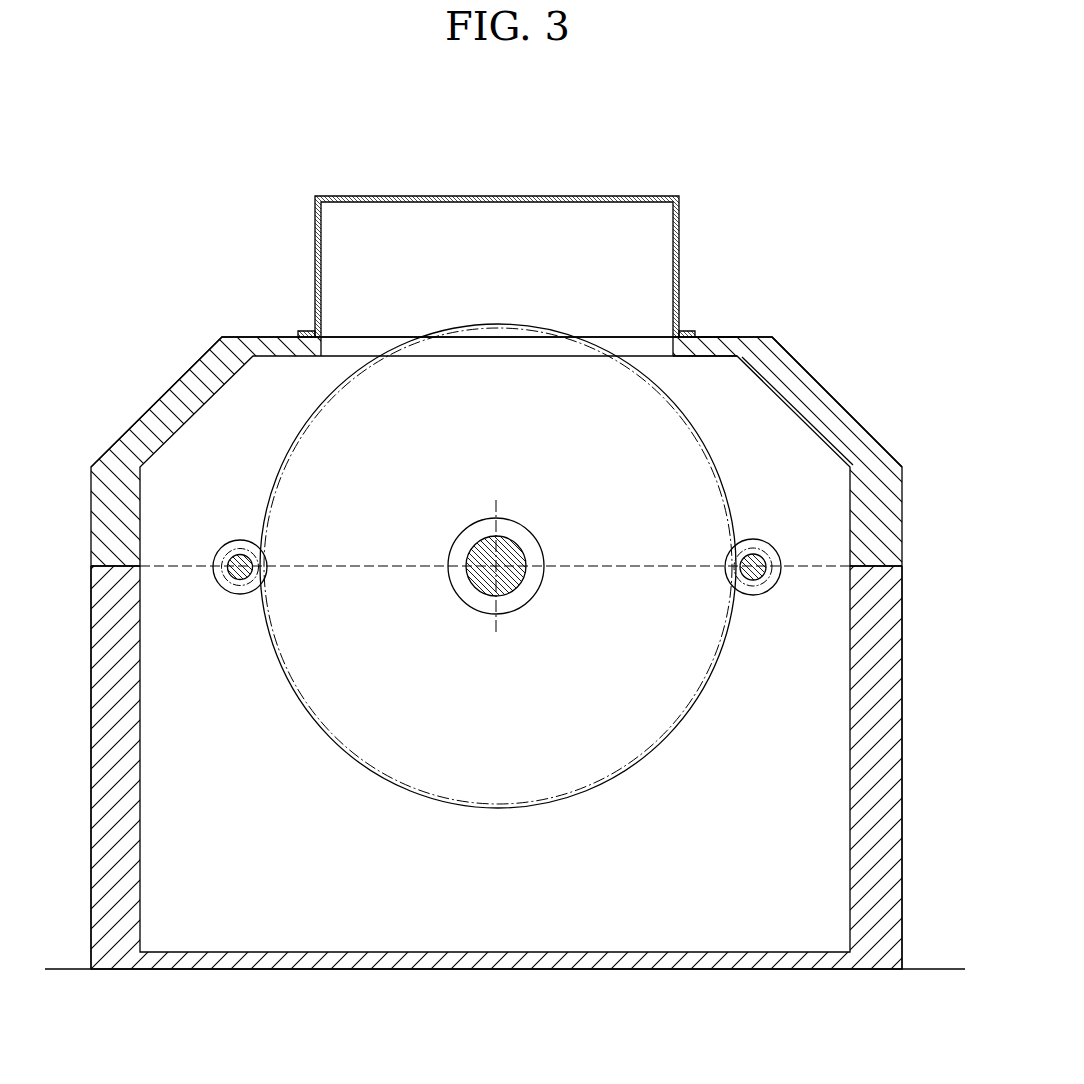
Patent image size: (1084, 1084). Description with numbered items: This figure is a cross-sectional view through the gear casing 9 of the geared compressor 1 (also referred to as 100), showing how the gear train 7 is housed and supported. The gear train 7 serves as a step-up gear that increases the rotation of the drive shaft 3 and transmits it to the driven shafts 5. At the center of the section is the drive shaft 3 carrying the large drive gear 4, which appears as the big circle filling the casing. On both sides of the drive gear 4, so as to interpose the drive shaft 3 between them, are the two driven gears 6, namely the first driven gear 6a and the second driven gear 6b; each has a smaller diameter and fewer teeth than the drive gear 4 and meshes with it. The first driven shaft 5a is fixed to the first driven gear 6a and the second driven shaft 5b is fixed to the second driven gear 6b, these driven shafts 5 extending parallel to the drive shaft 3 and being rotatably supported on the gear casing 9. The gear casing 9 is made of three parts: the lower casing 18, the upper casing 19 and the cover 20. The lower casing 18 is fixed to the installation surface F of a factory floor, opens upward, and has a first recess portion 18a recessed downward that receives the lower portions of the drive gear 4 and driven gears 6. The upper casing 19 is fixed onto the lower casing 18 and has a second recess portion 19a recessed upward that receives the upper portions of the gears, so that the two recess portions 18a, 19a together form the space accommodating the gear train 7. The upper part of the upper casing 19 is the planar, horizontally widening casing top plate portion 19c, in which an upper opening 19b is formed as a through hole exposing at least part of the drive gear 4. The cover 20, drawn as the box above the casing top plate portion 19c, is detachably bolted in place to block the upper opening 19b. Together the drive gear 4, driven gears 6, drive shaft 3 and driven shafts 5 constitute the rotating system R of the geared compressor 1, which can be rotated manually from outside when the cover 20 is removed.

The geared compressor 1 is at (833, 270).
The rotary machine 100 is at (519, 557).
The drive shaft 3 is at (523, 590).
The drive gear 4 is at (612, 778).
The driven shafts 5 is at (508, 525).
The first driven shaft 5a is at (760, 538).
The second driven shaft 5b is at (242, 540).
The driven gears 6 is at (507, 651).
The first driven gear 6a is at (755, 594).
The second driven gear 6b is at (232, 595).
The gear train 7 is at (307, 418).
The gear casing 9 is at (810, 376).
The lower casing 18 is at (902, 703).
The first recess portion 18a is at (852, 566).
The upper casing 19 is at (888, 455).
The second recess portion 19a is at (147, 563).
The upper opening 19b is at (672, 345).
The casing top plate portion 19c is at (700, 337).
The cover 20 is at (622, 196).
The rotating system R is at (670, 733).
The installation surface F is at (930, 968).